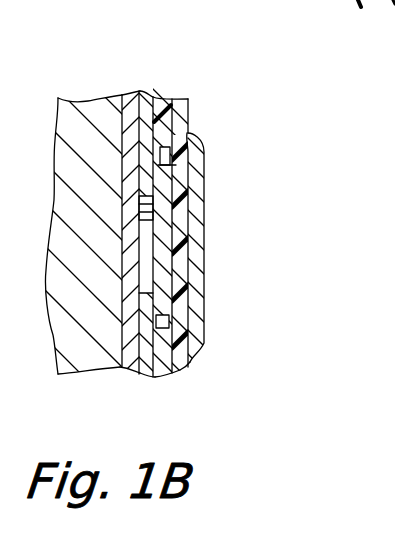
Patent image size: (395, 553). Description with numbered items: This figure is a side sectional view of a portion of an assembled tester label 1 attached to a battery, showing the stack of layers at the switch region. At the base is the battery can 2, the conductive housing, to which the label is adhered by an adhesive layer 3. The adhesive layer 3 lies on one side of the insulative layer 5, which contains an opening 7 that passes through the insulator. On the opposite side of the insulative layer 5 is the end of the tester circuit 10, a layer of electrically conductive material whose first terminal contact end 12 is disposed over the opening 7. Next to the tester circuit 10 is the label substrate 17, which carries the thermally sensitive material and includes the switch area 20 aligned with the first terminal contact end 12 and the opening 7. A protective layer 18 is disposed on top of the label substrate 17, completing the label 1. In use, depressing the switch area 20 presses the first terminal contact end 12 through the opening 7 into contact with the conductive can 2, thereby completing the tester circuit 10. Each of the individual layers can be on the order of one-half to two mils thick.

The tester label 1 is at (197, 390).
The can 2 is at (105, 370).
The adhesive layer 3 is at (128, 372).
The insulative layer 5 is at (148, 96).
The opening 7 is at (152, 265).
The tester circuit 10 is at (188, 133).
The first terminal contact end 12 is at (168, 230).
The label substrate 17 is at (163, 107).
The protective layer 18 is at (190, 318).
The switch area 20 is at (283, 200).